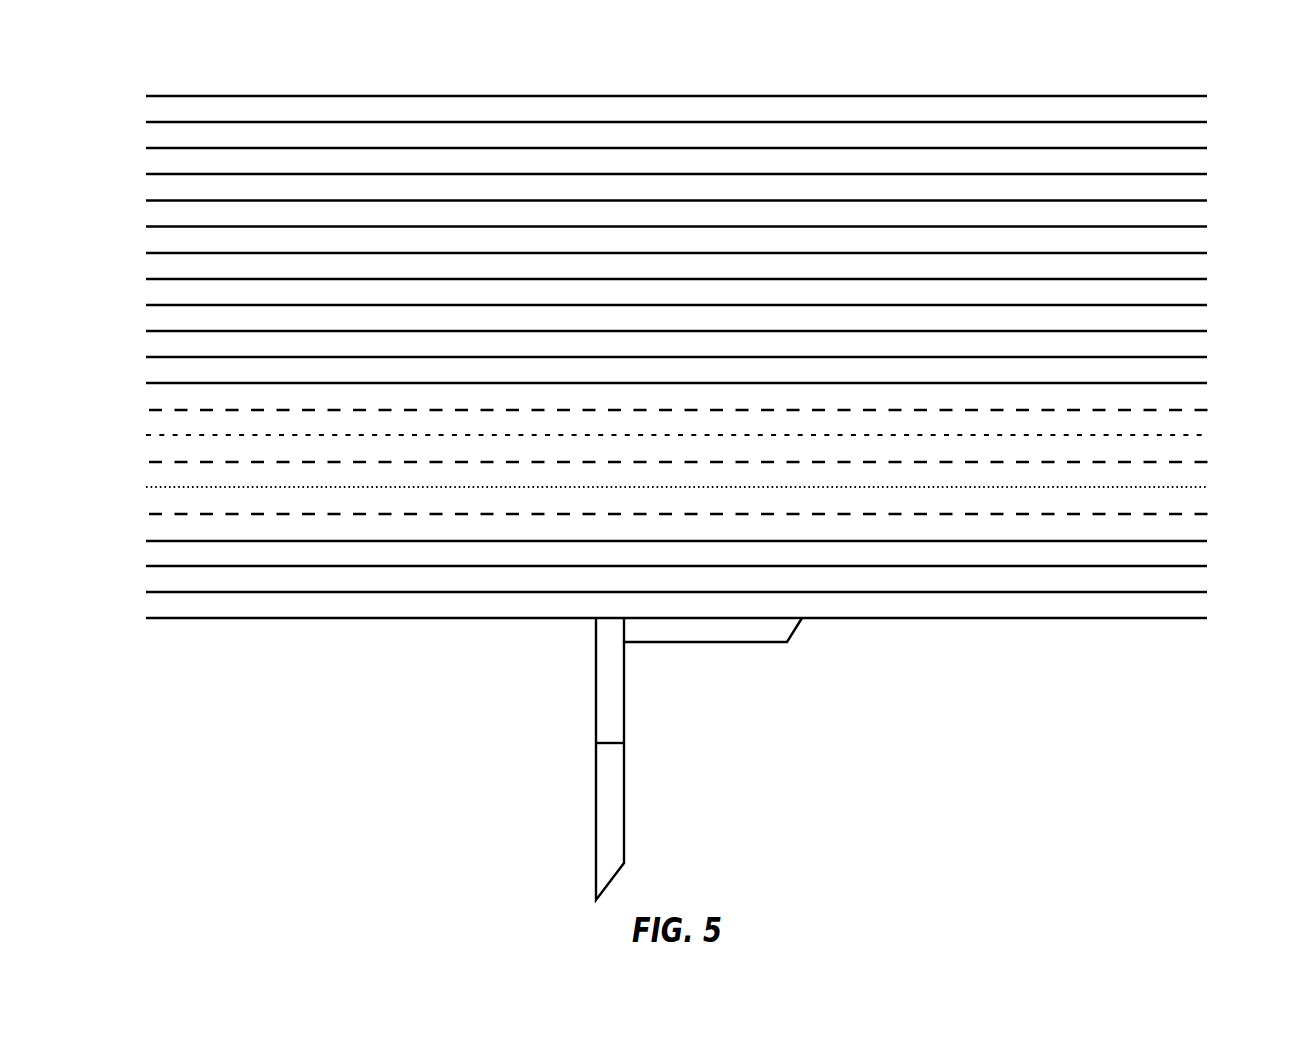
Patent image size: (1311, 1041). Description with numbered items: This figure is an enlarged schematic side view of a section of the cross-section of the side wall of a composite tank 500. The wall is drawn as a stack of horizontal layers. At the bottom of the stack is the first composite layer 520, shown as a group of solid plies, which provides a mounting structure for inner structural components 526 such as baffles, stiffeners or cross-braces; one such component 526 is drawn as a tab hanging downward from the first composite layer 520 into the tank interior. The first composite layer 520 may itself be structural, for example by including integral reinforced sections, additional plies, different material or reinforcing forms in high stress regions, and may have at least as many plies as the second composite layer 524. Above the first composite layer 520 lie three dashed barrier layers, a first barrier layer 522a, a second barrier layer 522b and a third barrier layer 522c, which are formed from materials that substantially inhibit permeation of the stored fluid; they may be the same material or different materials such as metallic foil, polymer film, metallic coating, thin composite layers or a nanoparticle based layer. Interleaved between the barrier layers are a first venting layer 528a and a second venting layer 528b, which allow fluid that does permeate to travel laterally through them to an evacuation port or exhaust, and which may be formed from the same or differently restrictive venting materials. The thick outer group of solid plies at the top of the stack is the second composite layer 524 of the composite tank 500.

The composite tank 500 is at (1214, 70).
The first composite layer 520 is at (1213, 541).
The first barrier layer 522a is at (1212, 514).
The second barrier layer 522b is at (1212, 462).
The third barrier layer 522c is at (1212, 410).
The second composite layer 524 is at (1213, 96).
The inner structural component 526 is at (602, 712).
The first venting layer 528a is at (146, 487).
The second venting layer 528b is at (146, 435).